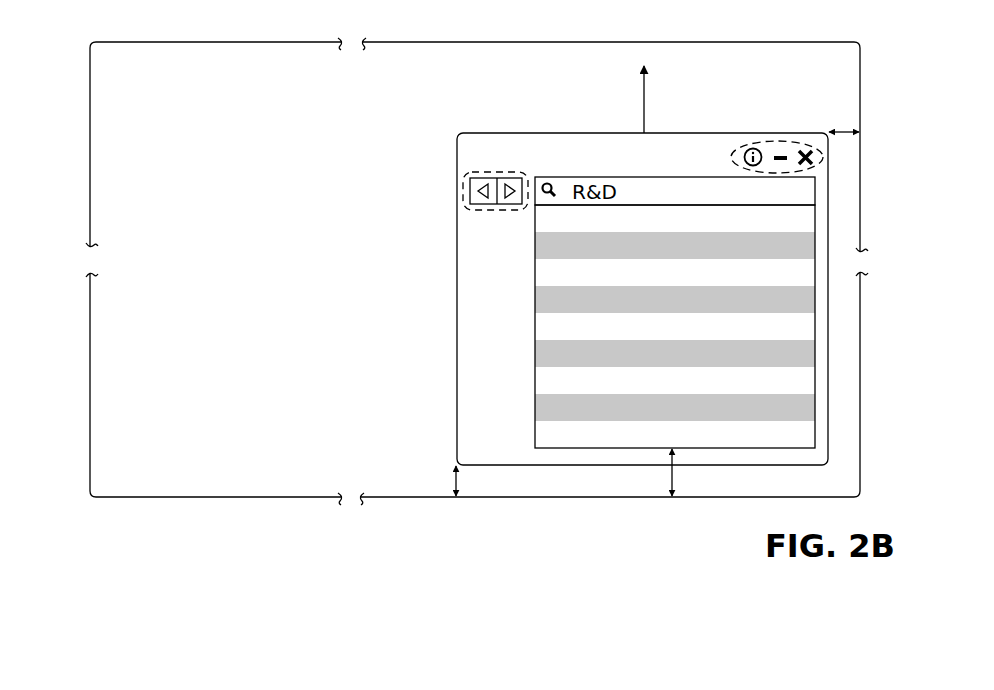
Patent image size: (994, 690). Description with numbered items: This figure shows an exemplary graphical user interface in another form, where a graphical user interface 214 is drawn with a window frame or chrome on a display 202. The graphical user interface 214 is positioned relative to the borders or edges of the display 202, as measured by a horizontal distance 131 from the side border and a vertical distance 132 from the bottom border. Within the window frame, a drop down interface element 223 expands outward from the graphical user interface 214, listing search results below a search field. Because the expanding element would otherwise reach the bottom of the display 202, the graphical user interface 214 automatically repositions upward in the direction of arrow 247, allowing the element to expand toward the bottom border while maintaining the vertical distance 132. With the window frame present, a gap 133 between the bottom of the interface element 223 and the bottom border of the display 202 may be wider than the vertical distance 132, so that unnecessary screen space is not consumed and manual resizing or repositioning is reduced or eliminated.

The display 202 is at (142, 30).
The graphical user interface 214 is at (569, 127).
The search result list 223 is at (535, 335).
The window movement arrow 247 is at (644, 112).
The horizontal distance 131 is at (847, 135).
The vertical distance 132 is at (456, 483).
The gap 133 is at (672, 483).